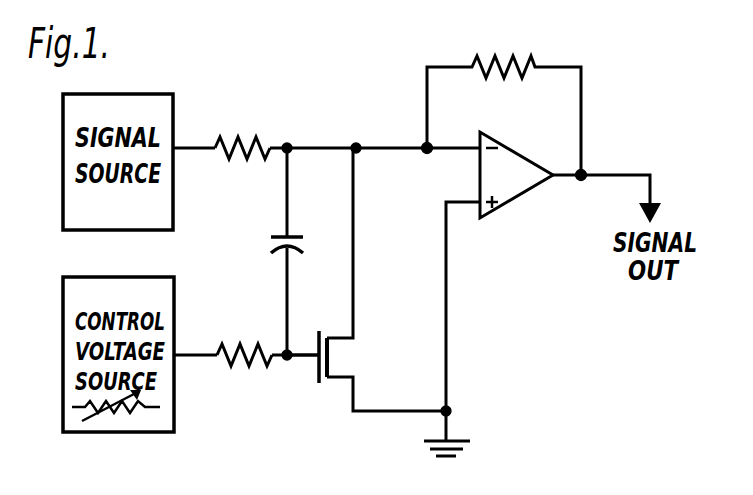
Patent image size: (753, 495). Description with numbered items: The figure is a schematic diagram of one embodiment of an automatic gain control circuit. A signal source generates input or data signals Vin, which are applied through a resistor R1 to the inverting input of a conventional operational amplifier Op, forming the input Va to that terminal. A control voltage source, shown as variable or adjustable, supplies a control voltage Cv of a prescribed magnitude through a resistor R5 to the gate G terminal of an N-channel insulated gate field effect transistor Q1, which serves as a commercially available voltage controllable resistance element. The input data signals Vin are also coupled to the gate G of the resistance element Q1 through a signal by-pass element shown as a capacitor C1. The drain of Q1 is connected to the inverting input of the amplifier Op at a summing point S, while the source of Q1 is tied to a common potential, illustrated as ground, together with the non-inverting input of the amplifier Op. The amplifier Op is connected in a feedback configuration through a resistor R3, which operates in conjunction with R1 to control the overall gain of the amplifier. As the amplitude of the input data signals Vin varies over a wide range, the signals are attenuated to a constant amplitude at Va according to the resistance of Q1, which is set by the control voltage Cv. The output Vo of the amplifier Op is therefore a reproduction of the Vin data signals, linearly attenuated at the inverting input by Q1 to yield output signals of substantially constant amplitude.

The input or data signals Vin is at (194, 132).
The resistor R1 is at (242, 129).
The capacitor C1 is at (273, 251).
The control voltage Cv is at (195, 339).
The resistor R5 is at (244, 337).
The N-channel insulated gate field effect transistor Q1 is at (382, 279).
The gate terminal G is at (303, 378).
The input to inverting terminal Va is at (442, 133).
The summing point S is at (422, 158).
The operational amplifier Op is at (516, 175).
The resistor R3 is at (504, 98).
The output Vo is at (607, 181).